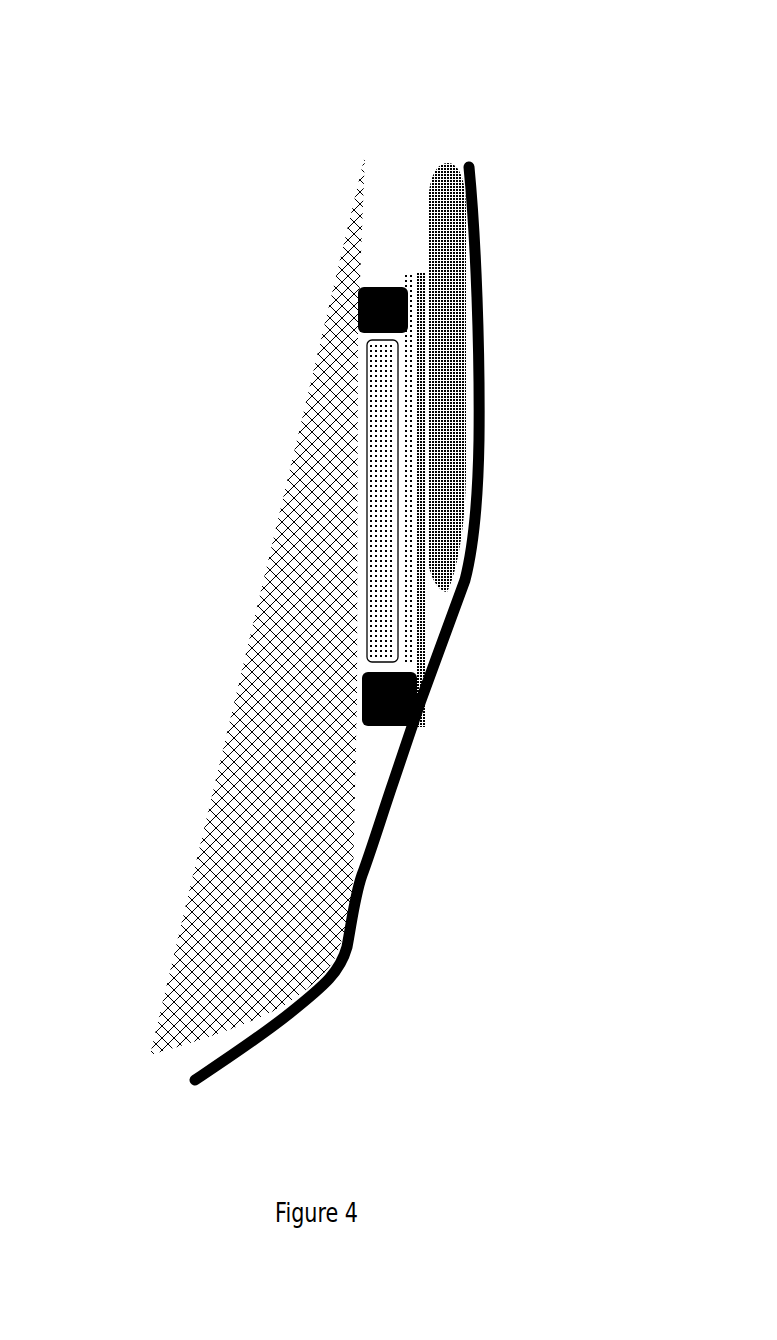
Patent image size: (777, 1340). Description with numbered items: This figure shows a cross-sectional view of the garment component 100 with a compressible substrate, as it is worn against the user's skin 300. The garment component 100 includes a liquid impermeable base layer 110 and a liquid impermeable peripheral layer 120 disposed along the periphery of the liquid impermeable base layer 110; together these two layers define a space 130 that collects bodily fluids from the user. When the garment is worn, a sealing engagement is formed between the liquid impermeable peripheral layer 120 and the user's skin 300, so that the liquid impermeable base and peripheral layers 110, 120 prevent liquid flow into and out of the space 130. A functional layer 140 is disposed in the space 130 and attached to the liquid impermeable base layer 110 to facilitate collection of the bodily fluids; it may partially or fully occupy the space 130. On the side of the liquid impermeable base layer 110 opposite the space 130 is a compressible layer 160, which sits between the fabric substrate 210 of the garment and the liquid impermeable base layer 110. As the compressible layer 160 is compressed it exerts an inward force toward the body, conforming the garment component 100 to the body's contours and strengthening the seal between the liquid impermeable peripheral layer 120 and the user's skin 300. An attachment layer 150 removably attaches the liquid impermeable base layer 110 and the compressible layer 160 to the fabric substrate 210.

The garment component 100 is at (140, 125).
The liquid impermeable base layer 110 is at (410, 660).
The liquid impermeable peripheral layer 120 is at (365, 310).
The space 130 is at (367, 663).
The functional layer 140 is at (383, 455).
The attachment layer 150 is at (425, 602).
The compressible layer 160 is at (450, 316).
The fabric substrate 210 is at (477, 212).
The user's skin 300 is at (227, 905).